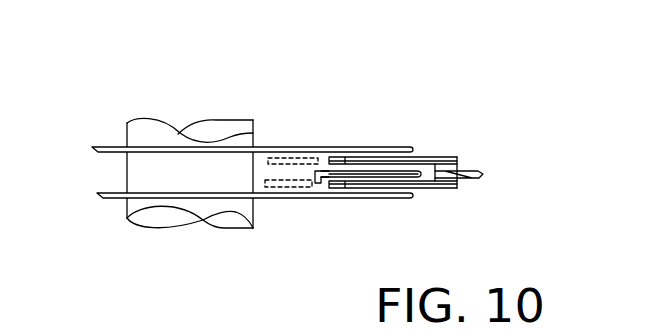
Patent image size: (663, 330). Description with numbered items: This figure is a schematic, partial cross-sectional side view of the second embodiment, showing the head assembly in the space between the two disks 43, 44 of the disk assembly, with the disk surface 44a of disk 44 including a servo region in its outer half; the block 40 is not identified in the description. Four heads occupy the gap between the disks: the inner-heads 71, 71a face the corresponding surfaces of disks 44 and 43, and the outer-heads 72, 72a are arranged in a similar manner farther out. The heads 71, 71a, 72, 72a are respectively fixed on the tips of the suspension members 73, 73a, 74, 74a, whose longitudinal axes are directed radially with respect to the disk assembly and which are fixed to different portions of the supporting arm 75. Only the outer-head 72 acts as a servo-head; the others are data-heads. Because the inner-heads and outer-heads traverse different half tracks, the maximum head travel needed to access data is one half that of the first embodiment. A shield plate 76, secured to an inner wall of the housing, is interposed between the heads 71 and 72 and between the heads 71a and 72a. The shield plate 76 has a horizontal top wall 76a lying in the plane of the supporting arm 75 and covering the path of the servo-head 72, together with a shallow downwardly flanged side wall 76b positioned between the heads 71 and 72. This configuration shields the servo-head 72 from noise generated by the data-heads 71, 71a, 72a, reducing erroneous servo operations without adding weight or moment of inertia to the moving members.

The housing block 40 is at (125, 138).
The disk 43 is at (113, 154).
The disk 44 is at (118, 200).
The disk surface 44a is at (224, 152).
The inner-head 71 is at (292, 186).
The inner-head 71a is at (292, 157).
The outer-head 72 is at (334, 188).
The outer-head 72a is at (329, 159).
The suspension member 73 is at (306, 184).
The suspension member 73a is at (305, 158).
The suspension member 74 is at (423, 187).
The suspension member 74a is at (423, 161).
The supporting arm 75 is at (472, 180).
The shield plate 76 is at (399, 187).
The horizontal top wall 76a is at (372, 172).
The side wall 76b is at (313, 184).